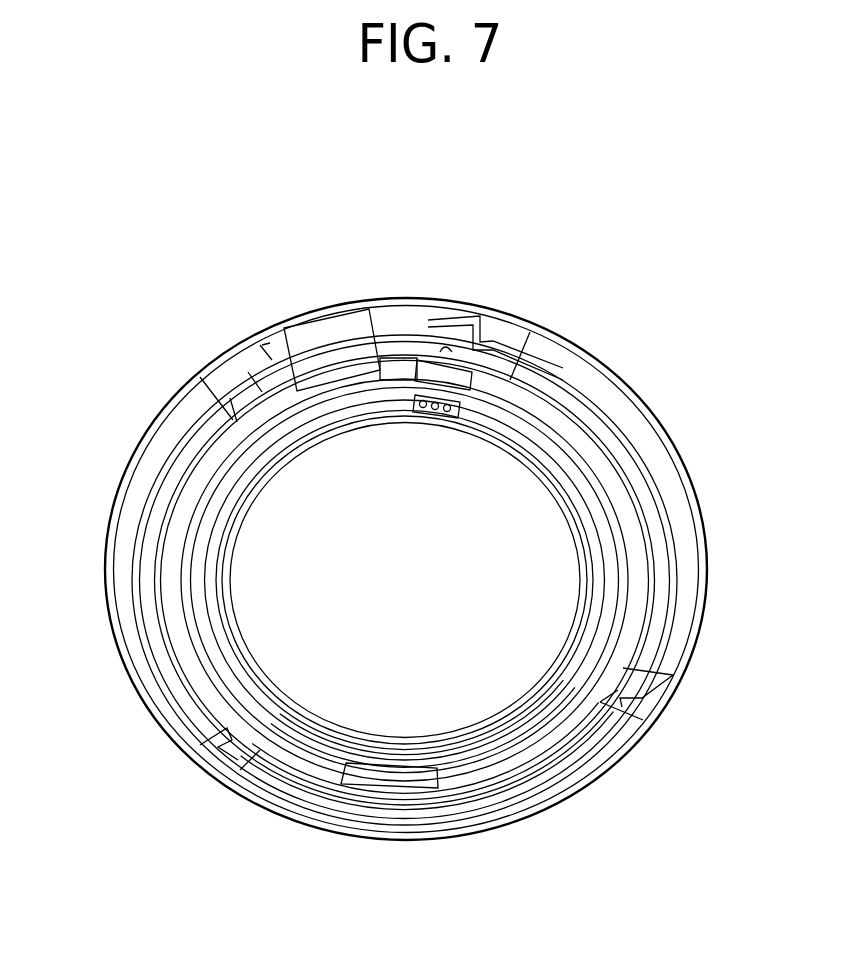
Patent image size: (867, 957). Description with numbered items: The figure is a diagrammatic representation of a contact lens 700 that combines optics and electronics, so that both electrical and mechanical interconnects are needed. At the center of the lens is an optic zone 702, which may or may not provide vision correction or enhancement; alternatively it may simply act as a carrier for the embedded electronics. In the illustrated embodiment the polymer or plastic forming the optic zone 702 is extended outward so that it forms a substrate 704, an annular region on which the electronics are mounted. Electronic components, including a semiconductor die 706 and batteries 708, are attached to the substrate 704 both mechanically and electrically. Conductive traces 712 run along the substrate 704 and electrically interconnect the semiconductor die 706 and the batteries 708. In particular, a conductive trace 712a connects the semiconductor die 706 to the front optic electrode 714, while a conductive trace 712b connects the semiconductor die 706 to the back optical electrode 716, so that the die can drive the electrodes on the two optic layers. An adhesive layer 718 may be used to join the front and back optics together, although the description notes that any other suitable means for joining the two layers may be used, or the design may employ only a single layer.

The contact lens 700 is at (207, 765).
The optic zone 702 is at (502, 498).
The substrate 704 is at (241, 368).
The semiconductor die 706 is at (323, 310).
The batteries 708 is at (685, 528).
The conductive traces 712 is at (487, 322).
The conductive trace 712a is at (272, 340).
The conductive trace 712b is at (392, 352).
The front optic electrode 714 is at (252, 502).
The back optical electrode 716 is at (455, 363).
The adhesive layer 718 is at (590, 534).